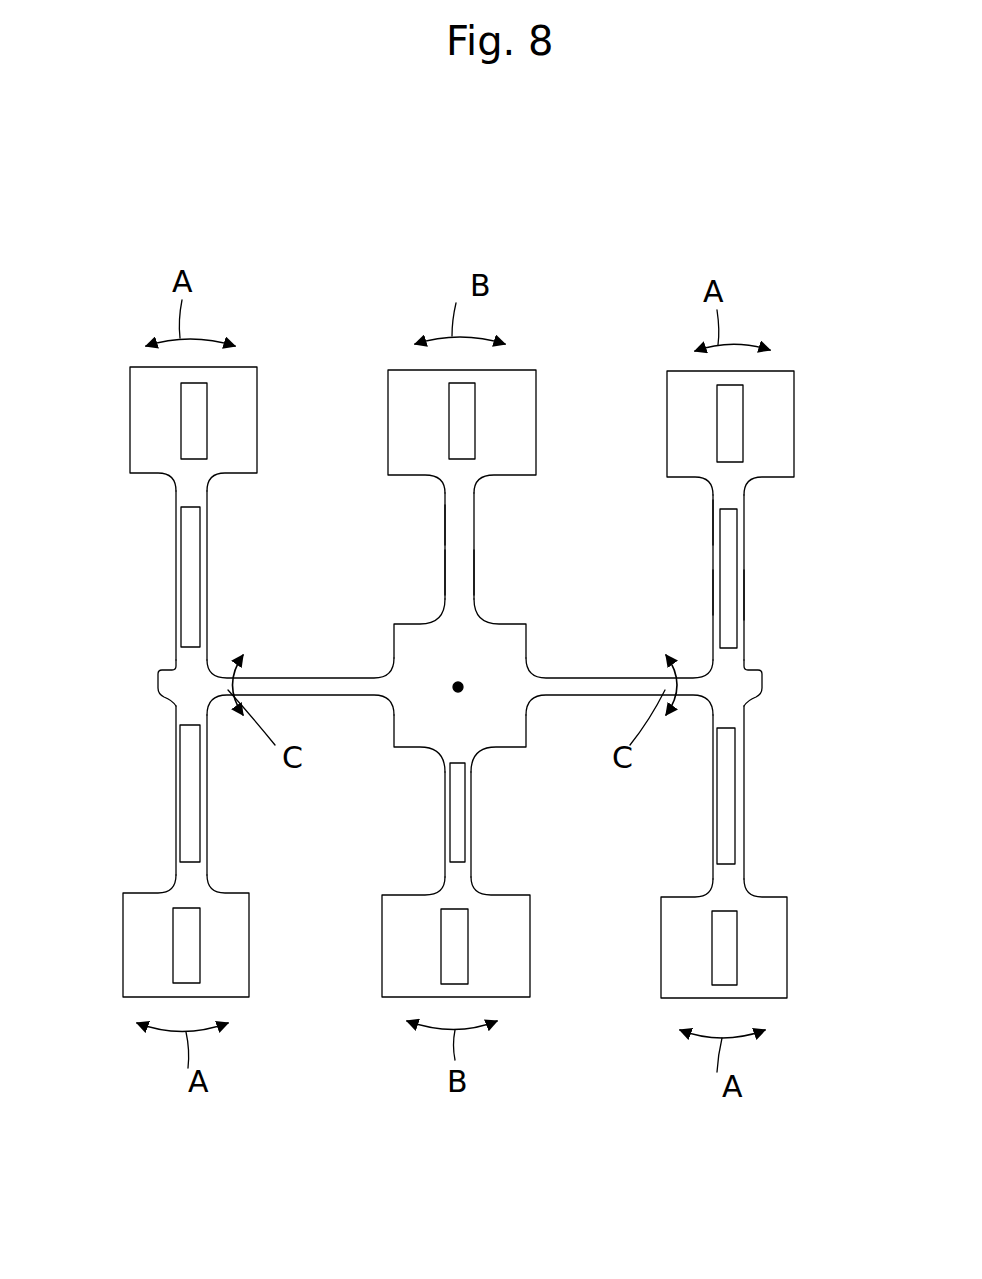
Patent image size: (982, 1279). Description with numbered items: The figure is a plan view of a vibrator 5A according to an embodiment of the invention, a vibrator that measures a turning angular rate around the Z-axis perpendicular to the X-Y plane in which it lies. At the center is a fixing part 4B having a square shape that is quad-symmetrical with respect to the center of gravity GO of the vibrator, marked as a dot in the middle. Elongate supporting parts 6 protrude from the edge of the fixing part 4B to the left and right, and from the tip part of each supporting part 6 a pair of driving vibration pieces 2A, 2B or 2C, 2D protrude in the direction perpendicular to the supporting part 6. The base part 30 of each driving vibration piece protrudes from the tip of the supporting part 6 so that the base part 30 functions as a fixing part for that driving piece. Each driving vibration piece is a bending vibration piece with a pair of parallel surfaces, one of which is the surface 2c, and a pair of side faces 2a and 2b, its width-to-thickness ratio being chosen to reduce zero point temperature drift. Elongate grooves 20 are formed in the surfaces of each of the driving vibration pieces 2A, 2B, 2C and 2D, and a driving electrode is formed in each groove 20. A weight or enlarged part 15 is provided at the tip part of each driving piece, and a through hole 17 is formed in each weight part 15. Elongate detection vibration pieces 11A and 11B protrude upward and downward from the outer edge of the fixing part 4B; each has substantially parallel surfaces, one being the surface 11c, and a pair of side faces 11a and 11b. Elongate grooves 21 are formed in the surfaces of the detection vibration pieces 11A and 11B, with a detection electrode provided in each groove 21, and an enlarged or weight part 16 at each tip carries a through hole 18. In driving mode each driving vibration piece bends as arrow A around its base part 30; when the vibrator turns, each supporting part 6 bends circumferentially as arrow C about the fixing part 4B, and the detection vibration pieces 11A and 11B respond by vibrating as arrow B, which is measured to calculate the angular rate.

The vibrator 5A is at (757, 340).
The weight part 15 is at (130, 421).
The weight part 16 is at (525, 424).
The through hole 17 is at (198, 428).
The through hole 18 is at (468, 412).
The driving vibration piece 2A is at (738, 500).
The driving vibration piece 2B is at (740, 820).
The driving vibration piece 2C is at (176, 822).
The driving vibration piece 2D is at (176, 586).
The side face 2a is at (745, 595).
The side face 2b is at (714, 591).
The surface 2c is at (714, 528).
The elongate groove 20 is at (195, 565).
The elongate groove 21 is at (458, 810).
The detection vibration piece 11A is at (465, 502).
The detection vibration piece 11B is at (460, 870).
The side face 11a is at (474, 570).
The side face 11b is at (448, 570).
The surface 11c is at (450, 540).
The fixing part 4B is at (505, 630).
The supporting part 6 is at (337, 685).
The base part 30 is at (174, 673).
The center of gravity GO is at (458, 687).